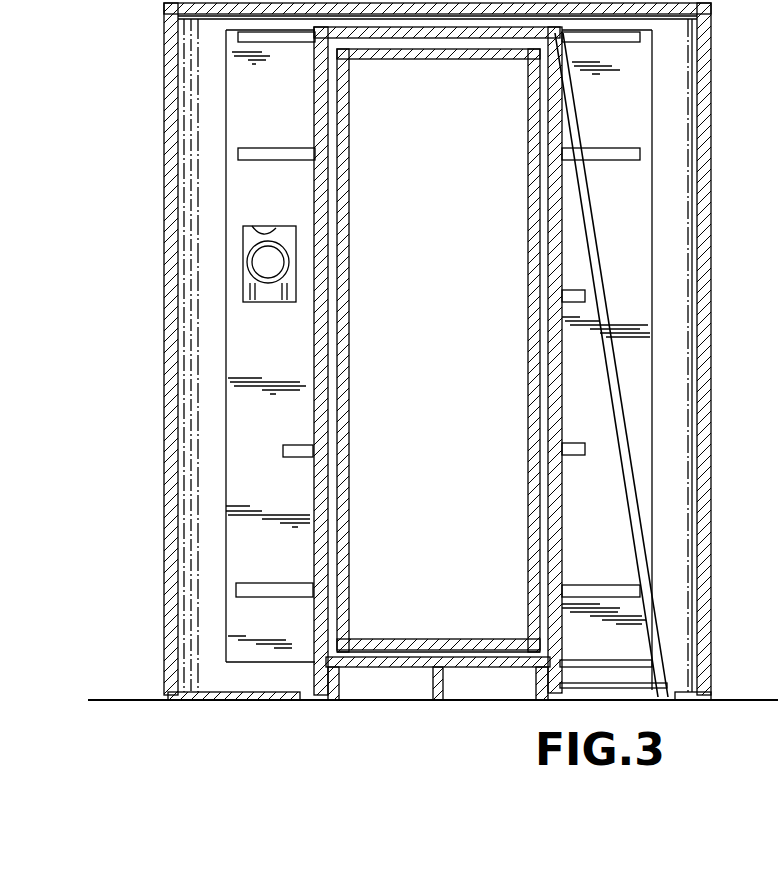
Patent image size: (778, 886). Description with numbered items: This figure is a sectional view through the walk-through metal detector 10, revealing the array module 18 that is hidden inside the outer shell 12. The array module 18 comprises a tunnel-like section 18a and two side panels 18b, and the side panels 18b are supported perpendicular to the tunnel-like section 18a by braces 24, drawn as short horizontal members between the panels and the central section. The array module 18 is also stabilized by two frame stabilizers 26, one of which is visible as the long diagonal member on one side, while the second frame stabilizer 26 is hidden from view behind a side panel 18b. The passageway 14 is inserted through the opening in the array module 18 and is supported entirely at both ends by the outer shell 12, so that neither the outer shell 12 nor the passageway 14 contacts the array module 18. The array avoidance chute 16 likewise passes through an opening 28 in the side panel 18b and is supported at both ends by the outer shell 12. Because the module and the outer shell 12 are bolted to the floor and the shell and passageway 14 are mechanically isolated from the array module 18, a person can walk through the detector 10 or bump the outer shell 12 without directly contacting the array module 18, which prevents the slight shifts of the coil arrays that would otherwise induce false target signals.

The walk-through metal detector 10 is at (88, 388).
The outer shell 12 is at (165, 338).
The passageway 14 is at (350, 307).
The array avoidance chute 16 is at (245, 245).
The array module 18 is at (682, 89).
The tunnel-like section 18a is at (313, 383).
The side panel 18b is at (221, 470).
The brace 24 is at (284, 44).
The frame stabilizer 26 is at (595, 213).
The opening 28 is at (252, 226).